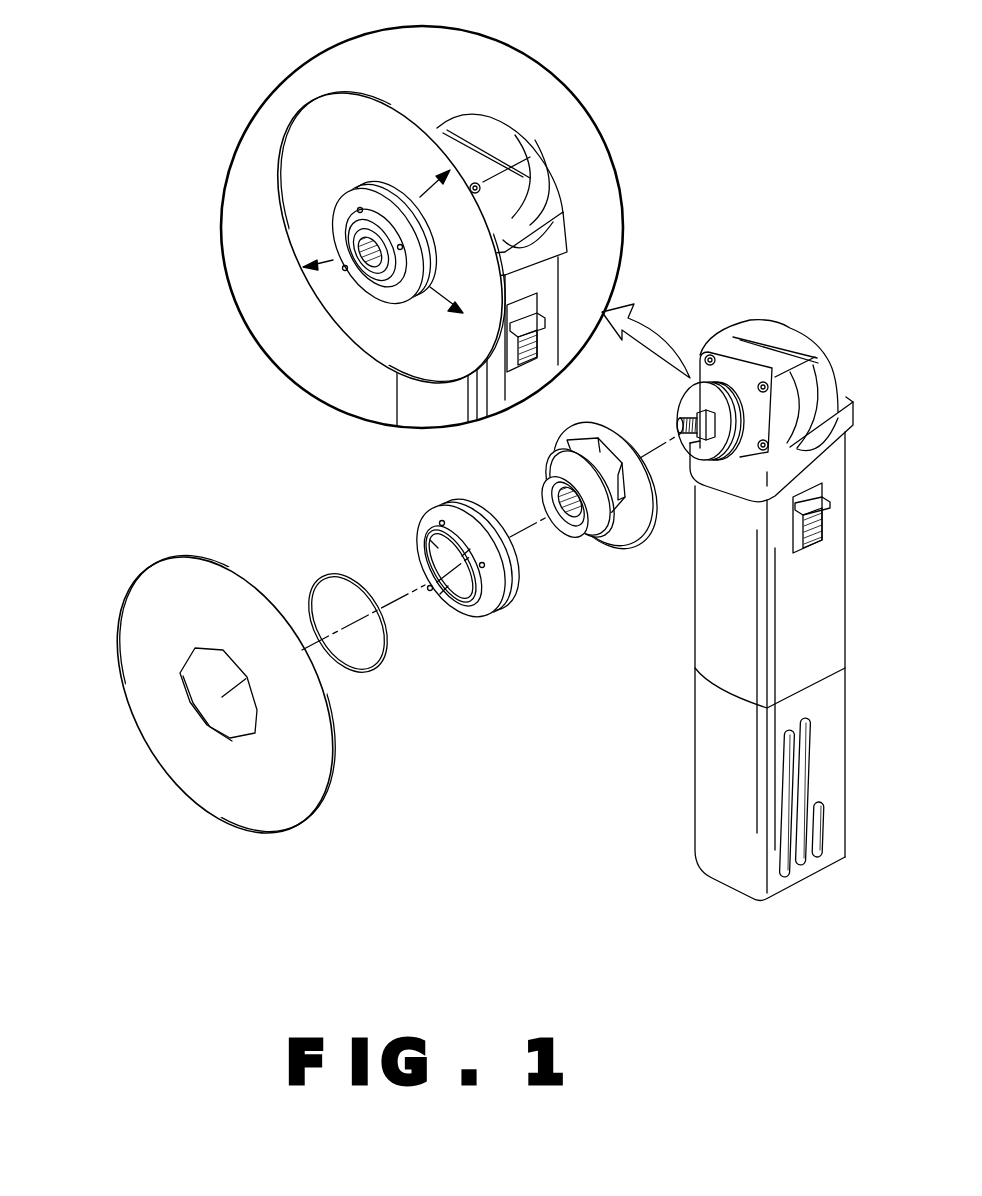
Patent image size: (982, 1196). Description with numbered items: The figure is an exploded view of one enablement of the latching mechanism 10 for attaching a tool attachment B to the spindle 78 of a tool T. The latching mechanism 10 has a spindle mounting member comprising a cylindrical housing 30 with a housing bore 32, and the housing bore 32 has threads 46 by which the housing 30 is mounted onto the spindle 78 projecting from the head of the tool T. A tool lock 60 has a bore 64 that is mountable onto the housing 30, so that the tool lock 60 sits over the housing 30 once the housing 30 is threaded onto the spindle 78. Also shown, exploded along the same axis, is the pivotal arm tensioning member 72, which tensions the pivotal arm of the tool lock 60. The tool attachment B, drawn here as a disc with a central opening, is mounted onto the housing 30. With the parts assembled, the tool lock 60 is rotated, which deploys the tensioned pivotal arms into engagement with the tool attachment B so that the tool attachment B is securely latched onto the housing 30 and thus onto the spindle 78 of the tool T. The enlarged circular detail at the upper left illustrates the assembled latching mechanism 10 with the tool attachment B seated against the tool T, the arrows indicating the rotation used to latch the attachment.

The latching system 10 is at (221, 131).
The cylindrical housing 30 is at (617, 565).
The housing bore 32 is at (563, 500).
The threads of housing bore 46 is at (572, 512).
The tool lock 60 is at (490, 628).
The tool lock housing bore 64 is at (458, 553).
The tensioning member 72 is at (327, 577).
The spindle 78 is at (688, 420).
The tool attachment B is at (212, 792).
The tool T is at (700, 837).